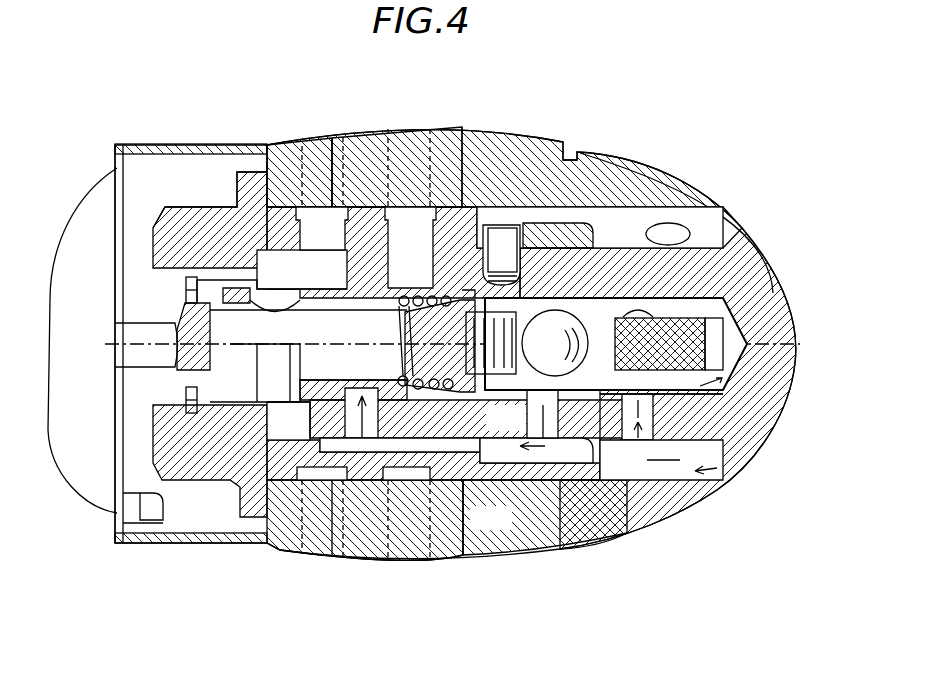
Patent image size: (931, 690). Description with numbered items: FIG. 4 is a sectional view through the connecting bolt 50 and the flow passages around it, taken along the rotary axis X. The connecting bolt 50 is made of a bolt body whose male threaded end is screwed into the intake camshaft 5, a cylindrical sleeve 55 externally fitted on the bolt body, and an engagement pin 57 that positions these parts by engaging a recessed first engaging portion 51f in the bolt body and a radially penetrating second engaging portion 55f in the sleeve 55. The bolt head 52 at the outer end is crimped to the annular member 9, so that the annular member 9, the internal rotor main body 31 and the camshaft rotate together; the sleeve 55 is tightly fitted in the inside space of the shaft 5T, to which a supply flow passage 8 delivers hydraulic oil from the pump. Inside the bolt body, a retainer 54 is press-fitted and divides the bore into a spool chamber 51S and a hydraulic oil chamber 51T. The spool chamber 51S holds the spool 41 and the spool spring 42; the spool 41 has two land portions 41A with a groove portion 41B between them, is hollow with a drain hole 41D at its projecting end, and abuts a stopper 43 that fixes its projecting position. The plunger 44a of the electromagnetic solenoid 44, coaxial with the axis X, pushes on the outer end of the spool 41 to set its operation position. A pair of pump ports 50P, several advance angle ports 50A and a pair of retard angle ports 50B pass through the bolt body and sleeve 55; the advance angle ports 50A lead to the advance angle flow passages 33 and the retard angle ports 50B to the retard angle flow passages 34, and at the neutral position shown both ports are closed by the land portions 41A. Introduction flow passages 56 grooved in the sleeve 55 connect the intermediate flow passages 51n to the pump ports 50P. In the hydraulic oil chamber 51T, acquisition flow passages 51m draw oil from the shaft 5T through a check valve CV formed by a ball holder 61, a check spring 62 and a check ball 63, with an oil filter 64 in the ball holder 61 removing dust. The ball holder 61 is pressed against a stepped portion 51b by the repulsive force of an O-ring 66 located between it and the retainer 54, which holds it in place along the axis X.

The intake camshaft 5 is at (660, 172).
The shaft 5T is at (702, 462).
The supply flow passage 8 is at (690, 236).
The annular member 9 is at (265, 145).
The internal rotor main body 31 is at (362, 143).
The advance angle flow passage 33 is at (303, 152).
The retard angle flow passage 34 is at (438, 548).
The spool 41 is at (176, 328).
The land portion 41A is at (300, 285).
The groove portion 41B is at (382, 402).
The drain hole 41D is at (272, 344).
The spool spring 42 is at (404, 378).
The stopper 43 is at (188, 290).
The electromagnetic solenoid 44 is at (80, 197).
The plunger 44a is at (130, 362).
The connecting bolt 50 is at (140, 453).
The advance angle port 50A is at (322, 250).
The retard angle port 50B is at (412, 245).
The pump port 50P is at (345, 424).
The stepped portion 51b is at (640, 400).
The first engaging portion 51f is at (590, 235).
The acquisition flow passage 51m is at (727, 262).
The intermediate flow passage 51n is at (547, 434).
The spool chamber 51S is at (443, 393).
The hydraulic oil chamber 51T is at (655, 420).
The bolt head 52 is at (190, 207).
The retainer 54 is at (470, 400).
The sleeve 55 is at (288, 515).
The second engaging portion 55f is at (495, 236).
The introduction flow passage 56 is at (536, 460).
The engagement pin 57 is at (505, 250).
The ball holder 61 is at (617, 302).
The check spring 62 is at (523, 320).
The check ball 63 is at (598, 296).
The oil filter 64 is at (716, 352).
The O-ring 66 is at (470, 294).
The check valve CV is at (723, 315).
The rotary axis X is at (441, 344).